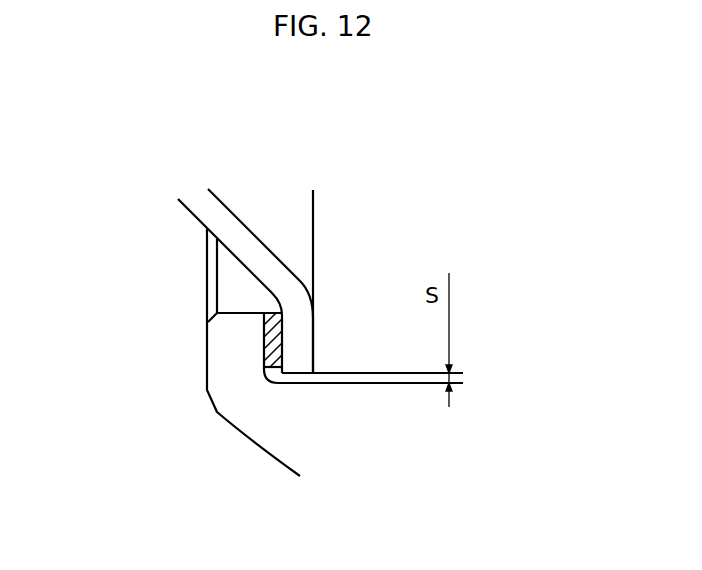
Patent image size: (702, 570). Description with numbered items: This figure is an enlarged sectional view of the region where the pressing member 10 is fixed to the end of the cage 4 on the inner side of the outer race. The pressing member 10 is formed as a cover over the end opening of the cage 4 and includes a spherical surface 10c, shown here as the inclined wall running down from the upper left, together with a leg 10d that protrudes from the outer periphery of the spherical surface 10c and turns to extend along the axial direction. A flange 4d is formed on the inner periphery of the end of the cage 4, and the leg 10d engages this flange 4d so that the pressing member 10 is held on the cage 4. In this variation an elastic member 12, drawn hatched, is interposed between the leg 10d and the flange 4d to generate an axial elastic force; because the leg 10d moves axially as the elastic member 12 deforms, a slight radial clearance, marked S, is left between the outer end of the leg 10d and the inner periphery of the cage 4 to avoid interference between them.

The cage 4 is at (291, 359).
The flange 4d is at (227, 332).
The pressing member 10 is at (242, 255).
The spherical surface 10c is at (215, 216).
The leg 10d is at (300, 342).
The elastic member 12 is at (263, 347).